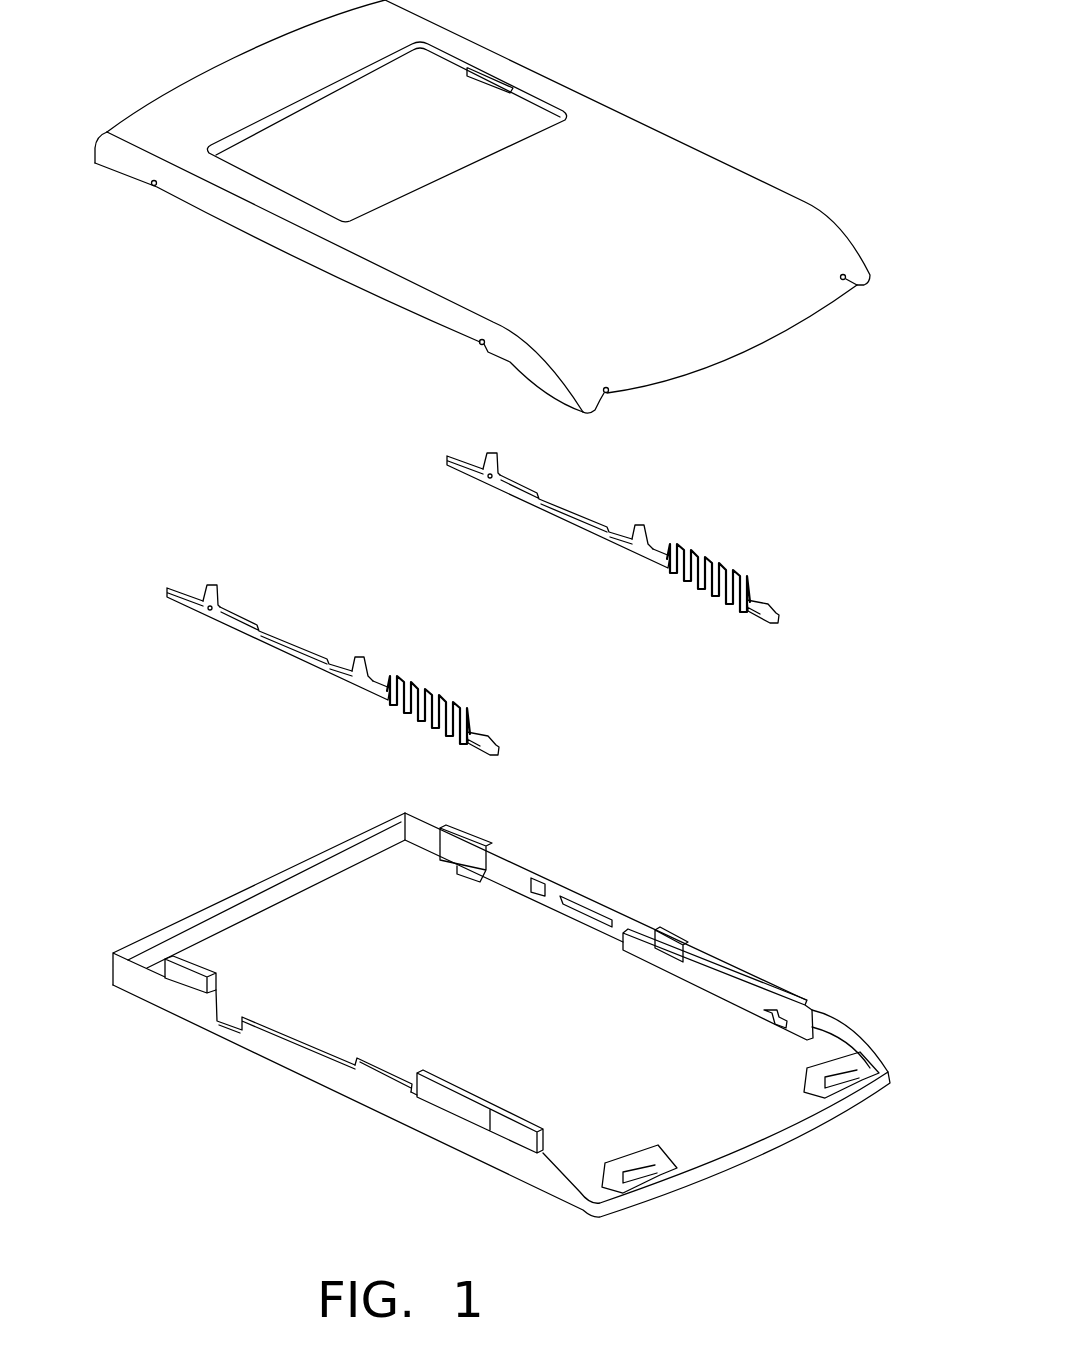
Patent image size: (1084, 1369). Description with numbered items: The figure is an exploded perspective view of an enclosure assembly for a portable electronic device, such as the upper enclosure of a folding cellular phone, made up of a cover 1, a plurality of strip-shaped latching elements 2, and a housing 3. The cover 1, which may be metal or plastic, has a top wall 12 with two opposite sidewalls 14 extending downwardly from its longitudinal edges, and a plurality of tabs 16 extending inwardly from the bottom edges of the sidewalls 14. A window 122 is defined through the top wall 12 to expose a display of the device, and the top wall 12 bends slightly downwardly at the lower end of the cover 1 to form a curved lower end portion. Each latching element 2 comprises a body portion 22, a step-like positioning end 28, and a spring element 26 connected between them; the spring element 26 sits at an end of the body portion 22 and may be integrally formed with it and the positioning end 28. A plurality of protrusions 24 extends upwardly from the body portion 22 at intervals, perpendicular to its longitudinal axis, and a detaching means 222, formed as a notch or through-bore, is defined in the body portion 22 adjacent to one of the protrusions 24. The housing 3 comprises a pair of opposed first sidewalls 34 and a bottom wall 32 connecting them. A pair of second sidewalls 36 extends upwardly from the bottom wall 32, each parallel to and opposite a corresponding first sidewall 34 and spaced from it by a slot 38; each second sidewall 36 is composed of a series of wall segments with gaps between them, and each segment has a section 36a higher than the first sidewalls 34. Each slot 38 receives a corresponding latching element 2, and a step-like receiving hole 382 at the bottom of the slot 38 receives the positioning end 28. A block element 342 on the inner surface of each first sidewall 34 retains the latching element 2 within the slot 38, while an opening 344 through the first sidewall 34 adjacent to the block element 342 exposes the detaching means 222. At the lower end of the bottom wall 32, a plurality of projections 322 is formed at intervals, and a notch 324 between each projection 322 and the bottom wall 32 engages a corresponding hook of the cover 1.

The cover 1 is at (482, 206).
The top wall 12 is at (648, 182).
The sidewalls 14 is at (245, 217).
The tabs 16 is at (490, 83).
The window 122 is at (522, 117).
The latching element 2 is at (464, 621).
The body portion 22 is at (528, 493).
The protrusions 24 is at (482, 466).
The detaching means 222 is at (487, 480).
The spring element 26 is at (727, 574).
The positioning end 28 is at (768, 627).
The housing 3 is at (497, 1030).
The bottom wall 32 is at (292, 920).
The first sidewalls 34 is at (363, 1088).
The second sidewalls 36 is at (517, 1133).
The section 36a is at (183, 977).
The slot 38 is at (653, 942).
The block element 342 is at (600, 908).
The opening 344 is at (233, 1010).
The receiving hole 382 is at (773, 1007).
The projections 322 is at (660, 1153).
The notch 324 is at (650, 1173).